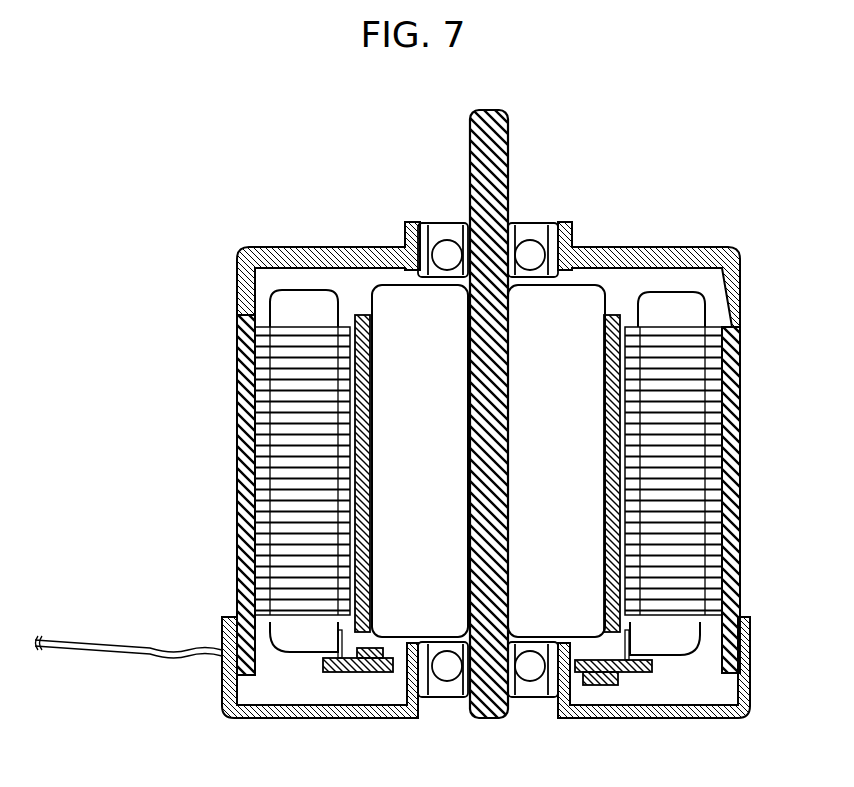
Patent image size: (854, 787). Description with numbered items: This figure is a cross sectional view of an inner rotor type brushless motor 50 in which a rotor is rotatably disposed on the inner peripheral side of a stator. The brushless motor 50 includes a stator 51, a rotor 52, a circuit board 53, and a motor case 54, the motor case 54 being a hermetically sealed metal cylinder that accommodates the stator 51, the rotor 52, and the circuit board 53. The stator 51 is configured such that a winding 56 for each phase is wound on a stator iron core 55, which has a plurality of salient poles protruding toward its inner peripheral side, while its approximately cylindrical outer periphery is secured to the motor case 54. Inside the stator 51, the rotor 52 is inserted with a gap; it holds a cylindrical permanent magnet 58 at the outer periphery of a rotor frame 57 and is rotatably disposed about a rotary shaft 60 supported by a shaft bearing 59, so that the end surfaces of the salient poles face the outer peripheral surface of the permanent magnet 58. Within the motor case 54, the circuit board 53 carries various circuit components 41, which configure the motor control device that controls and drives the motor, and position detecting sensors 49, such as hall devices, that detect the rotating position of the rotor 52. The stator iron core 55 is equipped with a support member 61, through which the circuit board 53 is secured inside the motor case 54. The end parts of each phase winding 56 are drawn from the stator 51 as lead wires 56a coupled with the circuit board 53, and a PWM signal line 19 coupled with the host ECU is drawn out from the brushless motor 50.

The PWM signal line 19 is at (175, 647).
The circuit components 41 is at (605, 685).
The position detecting sensors 49 is at (378, 672).
The brushless motor 50 is at (250, 247).
The stator 51 is at (685, 288).
The rotor 52 is at (600, 293).
The circuit board 53 is at (360, 672).
The motor case 54 is at (750, 637).
The stator iron core 55 is at (713, 410).
The winding 56 is at (688, 308).
The lead wires 56a is at (690, 657).
The rotor frame 57 is at (405, 300).
The permanent magnet 58 is at (357, 318).
The shaft bearing 59 is at (450, 238).
The rotary shaft 60 is at (508, 165).
The support member 61 is at (337, 645).